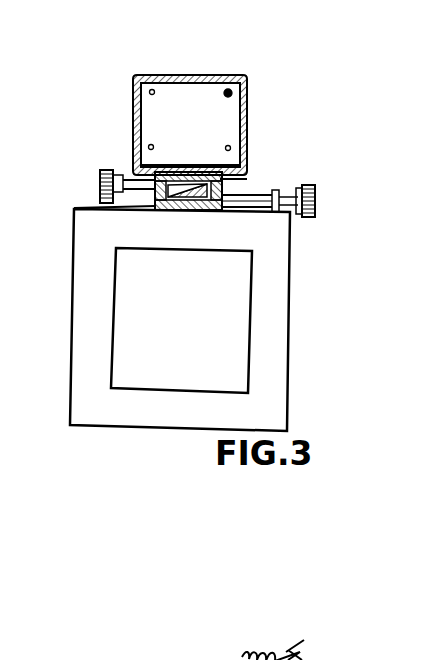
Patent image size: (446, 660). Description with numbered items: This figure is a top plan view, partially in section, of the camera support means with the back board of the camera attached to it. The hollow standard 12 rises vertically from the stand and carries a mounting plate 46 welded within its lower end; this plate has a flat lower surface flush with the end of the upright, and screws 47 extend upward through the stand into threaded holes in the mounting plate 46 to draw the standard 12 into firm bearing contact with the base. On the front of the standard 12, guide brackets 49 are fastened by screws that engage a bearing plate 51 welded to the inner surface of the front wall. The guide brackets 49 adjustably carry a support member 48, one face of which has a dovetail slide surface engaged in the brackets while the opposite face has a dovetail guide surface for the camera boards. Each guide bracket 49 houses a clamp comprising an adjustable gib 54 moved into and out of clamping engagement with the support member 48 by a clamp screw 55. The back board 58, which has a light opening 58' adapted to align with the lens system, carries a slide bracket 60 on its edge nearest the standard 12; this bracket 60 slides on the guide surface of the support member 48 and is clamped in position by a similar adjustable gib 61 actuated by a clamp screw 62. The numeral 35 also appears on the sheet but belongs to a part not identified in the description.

The standard 12 is at (190, 73).
The mounting plate 46 is at (221, 121).
The screws 47 is at (229, 92).
The support member 48 is at (189, 208).
The guide brackets 49 is at (248, 173).
The bearing plate 51 is at (179, 165).
The adjustable gib 54 is at (134, 179).
The clamp screw 55 is at (100, 177).
The back board 58 is at (203, 320).
The light opening 58' is at (229, 320).
The slide bracket 60 is at (100, 206).
The adjustable gib 61 is at (212, 208).
The clamp screw 62 is at (316, 212).
The spring 35 is at (304, 641).